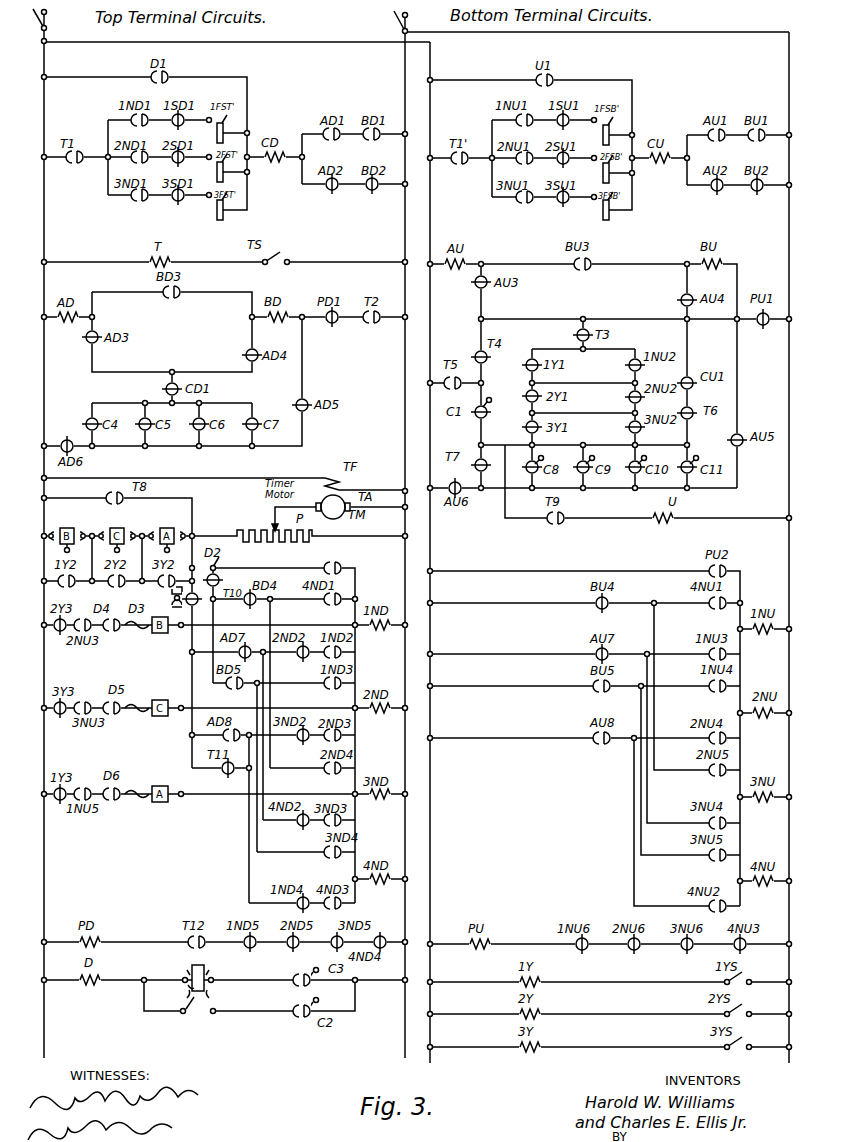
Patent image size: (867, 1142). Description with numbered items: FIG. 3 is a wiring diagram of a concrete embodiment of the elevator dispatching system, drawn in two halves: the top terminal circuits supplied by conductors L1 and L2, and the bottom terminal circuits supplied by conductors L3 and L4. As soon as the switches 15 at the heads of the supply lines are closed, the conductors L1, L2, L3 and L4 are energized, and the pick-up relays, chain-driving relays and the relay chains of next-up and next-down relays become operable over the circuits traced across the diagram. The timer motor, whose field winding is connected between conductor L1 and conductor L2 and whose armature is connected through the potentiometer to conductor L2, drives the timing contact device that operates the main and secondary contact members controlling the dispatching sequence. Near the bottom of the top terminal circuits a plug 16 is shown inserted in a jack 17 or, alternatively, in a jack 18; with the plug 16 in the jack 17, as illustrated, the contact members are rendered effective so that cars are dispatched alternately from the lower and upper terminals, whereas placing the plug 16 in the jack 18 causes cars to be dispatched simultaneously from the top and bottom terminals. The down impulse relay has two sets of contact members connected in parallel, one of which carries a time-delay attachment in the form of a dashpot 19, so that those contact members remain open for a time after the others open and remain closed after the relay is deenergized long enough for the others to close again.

The switches 15 is at (398, 18).
The conductor L1 is at (52, 529).
The conductor L2 is at (382, 1055).
The conductor L3 is at (431, 51).
The conductor L4 is at (791, 39).
The plug 16 is at (206, 963).
The jack 17 is at (211, 987).
The jack 18 is at (198, 1020).
The dashpot 19 is at (170, 597).